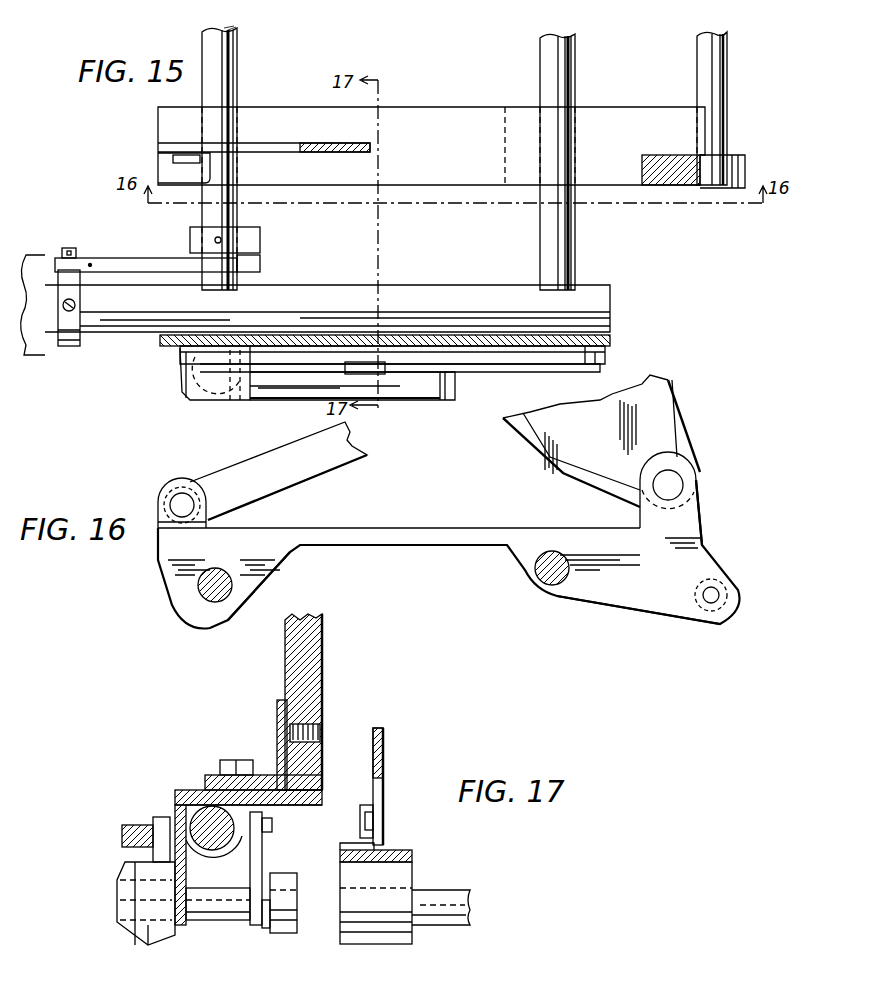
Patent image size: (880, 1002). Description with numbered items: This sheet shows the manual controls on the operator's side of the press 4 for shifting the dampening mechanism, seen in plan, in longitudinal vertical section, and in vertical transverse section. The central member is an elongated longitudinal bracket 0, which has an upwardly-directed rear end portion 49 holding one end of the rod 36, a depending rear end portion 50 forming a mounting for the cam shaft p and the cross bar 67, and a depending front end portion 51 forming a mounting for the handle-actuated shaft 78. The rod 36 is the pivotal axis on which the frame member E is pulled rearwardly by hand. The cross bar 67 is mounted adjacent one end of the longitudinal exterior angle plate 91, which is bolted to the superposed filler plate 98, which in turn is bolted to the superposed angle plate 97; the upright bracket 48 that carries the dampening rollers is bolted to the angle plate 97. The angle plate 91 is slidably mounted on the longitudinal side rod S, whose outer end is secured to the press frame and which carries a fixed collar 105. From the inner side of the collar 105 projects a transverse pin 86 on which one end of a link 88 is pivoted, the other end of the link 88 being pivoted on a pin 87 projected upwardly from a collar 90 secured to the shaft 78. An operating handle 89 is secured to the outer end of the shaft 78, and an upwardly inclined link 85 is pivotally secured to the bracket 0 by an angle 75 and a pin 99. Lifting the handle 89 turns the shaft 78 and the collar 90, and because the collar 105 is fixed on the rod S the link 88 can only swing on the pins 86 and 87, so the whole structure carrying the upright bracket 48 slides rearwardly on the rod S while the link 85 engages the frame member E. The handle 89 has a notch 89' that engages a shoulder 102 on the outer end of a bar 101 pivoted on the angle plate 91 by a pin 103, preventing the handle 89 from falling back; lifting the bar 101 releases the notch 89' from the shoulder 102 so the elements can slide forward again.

In FIG. 15, the elongated longitudinal bracket 0 is at (458, 112).
In FIG. 16, the elongated longitudinal bracket 0 is at (506, 530).
In FIG. 17, the elongated longitudinal bracket 0 is at (400, 850).
In FIG. 15, the press 4 is at (30, 362).
In FIG. 16, the rod 36 is at (678, 484).
In FIG. 17, the upright bracket 48 is at (312, 684).
In FIG. 15, the upwardly-directed rear end portion 49 is at (692, 186).
In FIG. 16, the upwardly-directed rear end portion 49 is at (690, 512).
In FIG. 15, the depending rear end portion 50 is at (744, 160).
In FIG. 16, the depending rear end portion 50 is at (636, 602).
In FIG. 16, the depending front end portion 51 is at (250, 580).
In FIG. 17, the depending front end portion 51 is at (414, 878).
In FIG. 15, the cross bar 67 is at (566, 268).
In FIG. 16, the cross bar 67 is at (545, 588).
In FIG. 15, the angle 75 is at (165, 166).
In FIG. 16, the angle 75 is at (208, 522).
In FIG. 17, the angle 75 is at (340, 846).
In FIG. 15, the handle-actuated shaft 78 is at (237, 56).
In FIG. 16, the handle-actuated shaft 78 is at (213, 603).
In FIG. 17, the handle-actuated shaft 78 is at (466, 894).
In FIG. 15, the upwardly inclined link 85 is at (304, 146).
In FIG. 16, the upwardly inclined link 85 is at (322, 470).
In FIG. 17, the upwardly inclined link 85 is at (384, 760).
In FIG. 15, the transverse pin 86 is at (70, 248).
In FIG. 17, the transverse pin 86 is at (272, 826).
In FIG. 15, the pin 87 is at (262, 260).
In FIG. 17, the pin 87 is at (266, 928).
In FIG. 15, the link 88 is at (116, 260).
In FIG. 17, the link 88 is at (263, 856).
In FIG. 15, the operating handle 89 is at (352, 399).
In FIG. 17, the operating handle 89 is at (111, 836).
In FIG. 15, the notch 89' is at (366, 373).
In FIG. 17, the notch 89' is at (122, 881).
In FIG. 15, the collar 90 is at (190, 240).
In FIG. 17, the collar 90 is at (290, 876).
In FIG. 15, the longitudinal exterior angle plate 91 is at (488, 362).
In FIG. 17, the longitudinal exterior angle plate 91 is at (182, 802).
In FIG. 17, the angle plate 97 is at (278, 704).
In FIG. 17, the filler plate 98 is at (205, 782).
In FIG. 15, the pin 99 is at (190, 164).
In FIG. 16, the pin 99 is at (180, 496).
In FIG. 17, the pin 99 is at (360, 820).
In FIG. 15, the bar 101 is at (540, 364).
In FIG. 17, the bar 101 is at (174, 806).
In FIG. 15, the shoulder 102 is at (186, 388).
In FIG. 15, the pin 103 is at (604, 344).
In FIG. 15, the fixed collar 105 is at (72, 348).
In FIG. 17, the fixed collar 105 is at (212, 862).
In FIG. 15, the longitudinal side rod S is at (440, 296).
In FIG. 17, the longitudinal side rod S is at (214, 852).
In FIG. 16, the frame member E is at (682, 428).
In FIG. 15, the cam shaft p is at (724, 66).
In FIG. 16, the cam shaft p is at (710, 605).